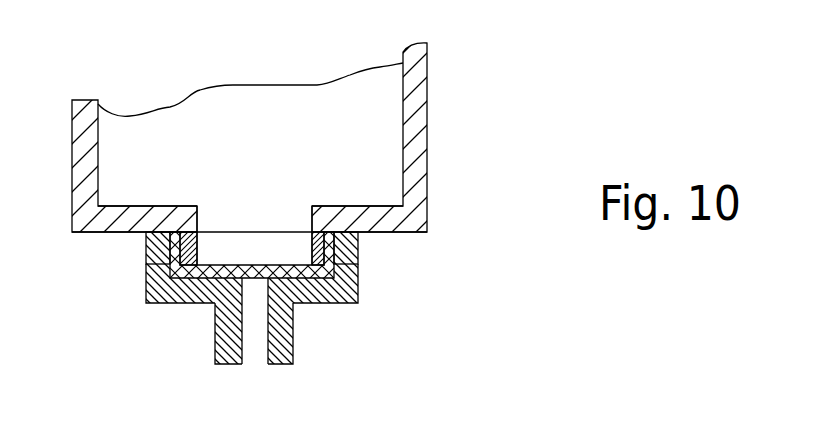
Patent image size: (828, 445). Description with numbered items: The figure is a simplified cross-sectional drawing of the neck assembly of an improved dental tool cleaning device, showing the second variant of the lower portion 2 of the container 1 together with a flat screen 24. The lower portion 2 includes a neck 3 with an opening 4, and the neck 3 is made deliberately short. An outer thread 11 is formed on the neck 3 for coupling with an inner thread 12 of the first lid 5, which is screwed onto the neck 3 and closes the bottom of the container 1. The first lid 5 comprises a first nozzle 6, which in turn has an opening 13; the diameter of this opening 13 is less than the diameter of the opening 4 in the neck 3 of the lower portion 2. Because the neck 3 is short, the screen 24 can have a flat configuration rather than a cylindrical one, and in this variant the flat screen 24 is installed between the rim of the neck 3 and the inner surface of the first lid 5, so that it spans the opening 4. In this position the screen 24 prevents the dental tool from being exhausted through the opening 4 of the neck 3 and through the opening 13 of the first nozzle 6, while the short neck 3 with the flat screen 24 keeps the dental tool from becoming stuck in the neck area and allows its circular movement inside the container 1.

The container 1 is at (283, 119).
The lower portion 2 is at (446, 136).
The neck 3 is at (205, 232).
The opening 4 is at (236, 220).
The first lid 5 is at (358, 284).
The first nozzle 6 is at (290, 332).
The outer thread 11 is at (193, 251).
The inner thread 12 is at (146, 266).
The opening 13 is at (255, 343).
The screen 24 is at (272, 265).